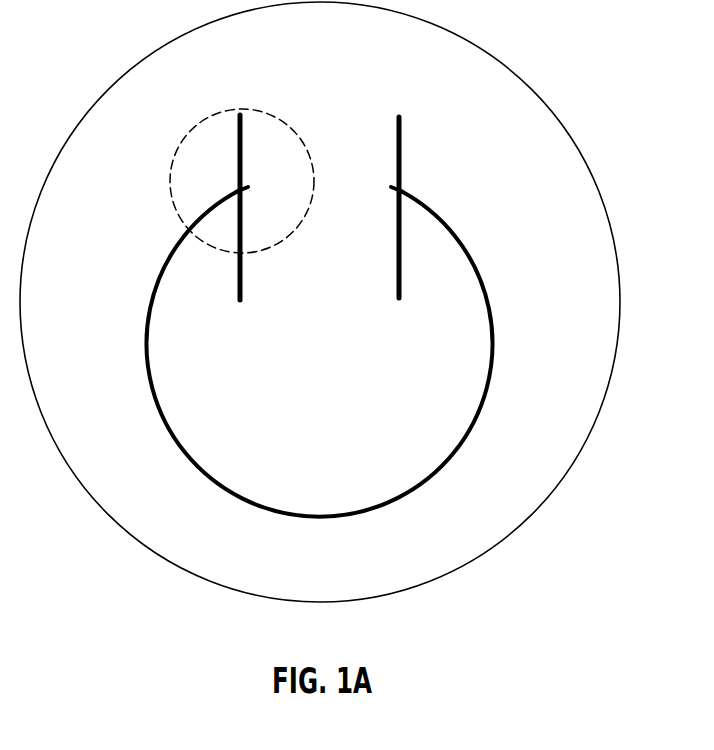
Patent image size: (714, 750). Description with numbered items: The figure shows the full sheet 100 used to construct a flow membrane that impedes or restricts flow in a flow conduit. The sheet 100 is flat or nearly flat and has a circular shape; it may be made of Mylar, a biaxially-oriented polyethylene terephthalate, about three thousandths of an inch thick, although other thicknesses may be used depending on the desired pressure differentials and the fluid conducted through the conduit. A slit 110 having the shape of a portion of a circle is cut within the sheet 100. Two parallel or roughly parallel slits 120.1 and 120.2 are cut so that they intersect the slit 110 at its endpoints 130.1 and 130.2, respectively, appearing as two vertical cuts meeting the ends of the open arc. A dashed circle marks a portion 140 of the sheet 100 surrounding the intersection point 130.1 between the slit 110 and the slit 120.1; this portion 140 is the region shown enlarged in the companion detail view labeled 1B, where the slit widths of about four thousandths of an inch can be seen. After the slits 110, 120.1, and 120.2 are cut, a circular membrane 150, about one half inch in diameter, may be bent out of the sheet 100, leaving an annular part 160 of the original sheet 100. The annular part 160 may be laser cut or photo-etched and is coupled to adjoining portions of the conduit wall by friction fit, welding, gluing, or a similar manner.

The sheet 100 is at (164, 47).
The slit 110 is at (179, 245).
The slit 120.1 is at (243, 125).
The slit 120.2 is at (396, 150).
The endpoint 130.1 is at (243, 190).
The endpoint 130.2 is at (397, 188).
The portion 140 is at (192, 112).
The detail view indicator 1B is at (188, 128).
The membrane 150 is at (265, 422).
The annular part 160 is at (190, 522).